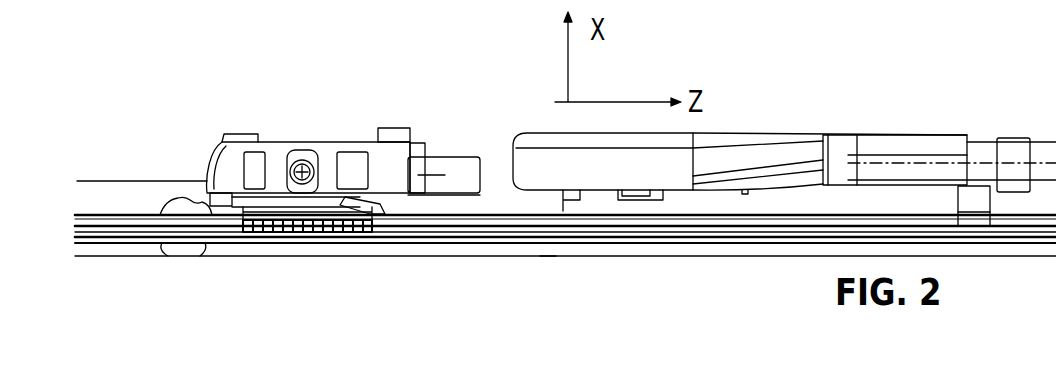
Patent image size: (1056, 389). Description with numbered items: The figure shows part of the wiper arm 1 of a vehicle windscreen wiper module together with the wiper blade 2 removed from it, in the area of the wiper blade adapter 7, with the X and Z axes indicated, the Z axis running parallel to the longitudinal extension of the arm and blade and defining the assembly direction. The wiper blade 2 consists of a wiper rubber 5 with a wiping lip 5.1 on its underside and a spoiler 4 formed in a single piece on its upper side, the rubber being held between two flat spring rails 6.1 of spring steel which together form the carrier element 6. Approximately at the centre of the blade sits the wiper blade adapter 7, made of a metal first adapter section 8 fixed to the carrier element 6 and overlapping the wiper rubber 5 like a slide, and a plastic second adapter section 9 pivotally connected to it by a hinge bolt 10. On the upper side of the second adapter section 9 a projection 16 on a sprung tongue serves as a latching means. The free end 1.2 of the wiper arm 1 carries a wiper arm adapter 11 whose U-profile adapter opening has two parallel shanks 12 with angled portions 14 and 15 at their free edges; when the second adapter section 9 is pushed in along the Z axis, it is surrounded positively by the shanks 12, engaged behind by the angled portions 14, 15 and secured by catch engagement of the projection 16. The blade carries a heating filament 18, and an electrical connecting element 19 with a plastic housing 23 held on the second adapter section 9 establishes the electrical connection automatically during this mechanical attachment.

The wiper arm 1 is at (941, 124).
The free end 1.2 is at (524, 122).
The wiper blade 2 is at (428, 268).
The spoiler 4 is at (129, 199).
The wiper rubber 5 is at (334, 252).
The wiping lip 5.1 is at (548, 257).
The carrier element 6 is at (187, 242).
The spring rail 6.1 is at (158, 275).
The wiper blade adapter 7 is at (300, 126).
The first adapter section 8 is at (262, 240).
The second adapter section 9 is at (258, 166).
The hinge bolt 10 is at (301, 157).
The wiper arm adapter 11 is at (666, 184).
The shanks 12 is at (616, 180).
The angled portion 14 is at (648, 198).
The angled portion 15 is at (568, 211).
The projection 16 is at (393, 128).
The heating filament 18 is at (375, 206).
The electrical connecting element 19 is at (465, 202).
The housing 23 is at (447, 143).